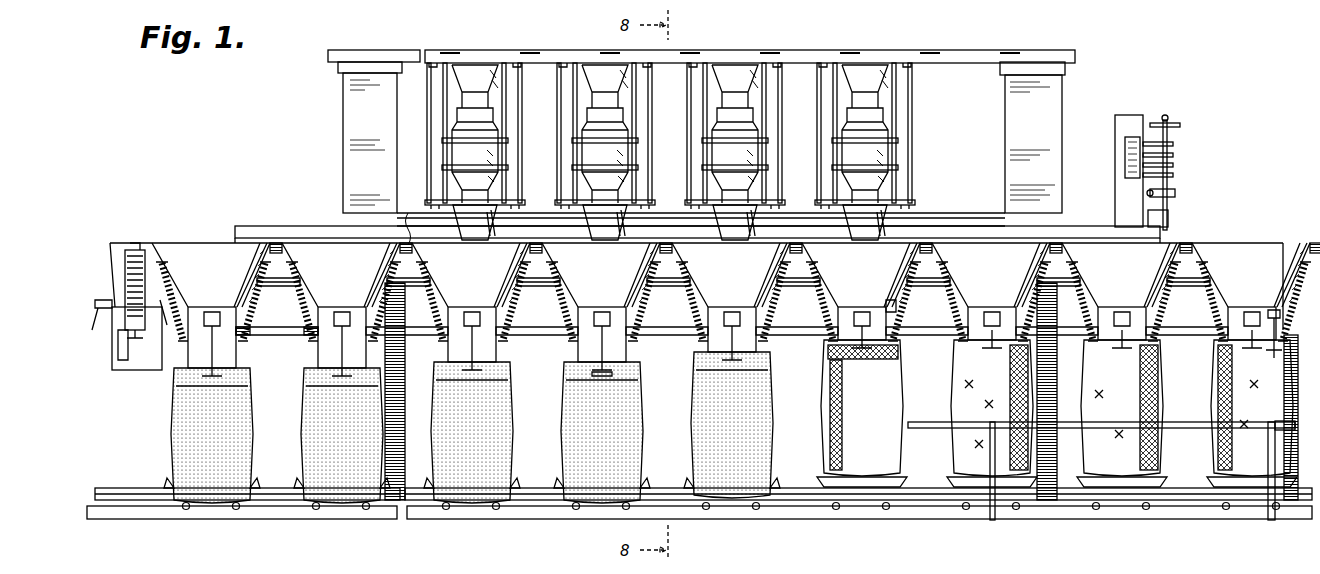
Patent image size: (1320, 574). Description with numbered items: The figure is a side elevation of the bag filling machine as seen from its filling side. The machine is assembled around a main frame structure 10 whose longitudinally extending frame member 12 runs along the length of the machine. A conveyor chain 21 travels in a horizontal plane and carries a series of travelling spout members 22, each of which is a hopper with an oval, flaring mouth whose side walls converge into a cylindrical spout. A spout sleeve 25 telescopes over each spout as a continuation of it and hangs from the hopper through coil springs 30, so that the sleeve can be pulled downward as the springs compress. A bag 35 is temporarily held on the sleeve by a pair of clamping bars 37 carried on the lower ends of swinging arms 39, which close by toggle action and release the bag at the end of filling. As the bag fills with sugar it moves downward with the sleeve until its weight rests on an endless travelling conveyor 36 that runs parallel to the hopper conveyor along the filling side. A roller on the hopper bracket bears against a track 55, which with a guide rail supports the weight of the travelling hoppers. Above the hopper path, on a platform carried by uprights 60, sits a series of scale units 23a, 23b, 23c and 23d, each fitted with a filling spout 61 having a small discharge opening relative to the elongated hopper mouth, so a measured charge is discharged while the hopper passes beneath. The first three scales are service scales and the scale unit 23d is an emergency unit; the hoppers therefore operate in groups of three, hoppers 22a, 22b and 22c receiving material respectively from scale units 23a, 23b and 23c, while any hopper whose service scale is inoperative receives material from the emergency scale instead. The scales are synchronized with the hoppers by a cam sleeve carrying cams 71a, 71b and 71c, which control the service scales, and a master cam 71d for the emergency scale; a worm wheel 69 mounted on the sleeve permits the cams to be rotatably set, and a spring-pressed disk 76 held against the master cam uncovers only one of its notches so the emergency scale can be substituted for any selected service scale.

The main frame structure 10 is at (326, 199).
The longitudinally extending frame member 12 is at (278, 250).
The conveyor chain 21 is at (543, 287).
The travelling spout member 22 is at (320, 250).
The hopper 22a is at (997, 292).
The hopper 22b is at (1127, 292).
The hopper 22c is at (1256, 292).
The scale unit 23a is at (893, 150).
The scale unit 23b is at (763, 143).
The scale unit 23c is at (633, 143).
The emergency scale unit 23d is at (503, 143).
The spout sleeve 25 is at (320, 352).
The coil spring 30 is at (903, 312).
The bag 35 is at (972, 371).
The endless travelling conveyor 36 is at (298, 490).
The clamping bar 37 is at (598, 372).
The swinging arm 39 is at (598, 350).
The track 55 is at (258, 335).
The upright 60 is at (356, 97).
The filling spout 61 is at (898, 207).
The worm wheel 69 is at (1176, 193).
The cam 71a is at (1180, 176).
The cam 71b is at (1180, 165).
The cam 71c is at (1180, 155).
The master cam 71d is at (1180, 146).
The disk 76 is at (1181, 143).